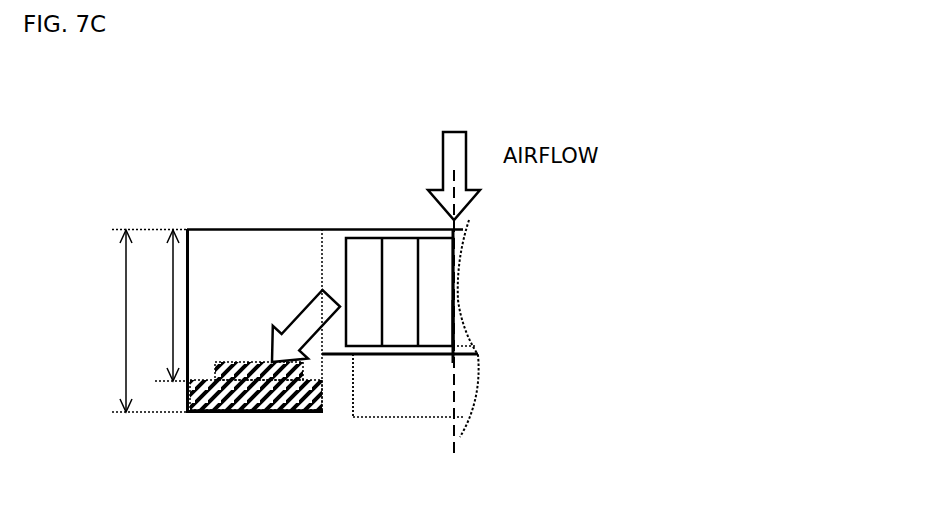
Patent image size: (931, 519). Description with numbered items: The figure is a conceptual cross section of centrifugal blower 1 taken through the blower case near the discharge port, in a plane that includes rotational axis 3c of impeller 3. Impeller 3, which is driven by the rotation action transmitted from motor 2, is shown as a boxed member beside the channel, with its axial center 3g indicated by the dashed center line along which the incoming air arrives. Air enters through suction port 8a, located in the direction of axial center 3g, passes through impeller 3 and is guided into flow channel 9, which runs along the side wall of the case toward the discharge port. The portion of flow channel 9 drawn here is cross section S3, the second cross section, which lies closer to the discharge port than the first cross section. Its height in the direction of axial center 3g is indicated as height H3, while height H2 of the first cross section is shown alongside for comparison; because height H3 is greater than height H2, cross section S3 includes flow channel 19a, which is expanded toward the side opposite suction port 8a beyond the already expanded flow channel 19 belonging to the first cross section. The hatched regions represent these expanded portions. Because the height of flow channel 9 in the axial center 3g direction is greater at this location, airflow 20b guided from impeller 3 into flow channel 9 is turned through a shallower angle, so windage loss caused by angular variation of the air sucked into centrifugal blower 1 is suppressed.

The centrifugal blower 1 is at (492, 359).
The motor 2 is at (405, 398).
The impeller 3 is at (403, 265).
The rotational axis 3c is at (548, 297).
The axial center 3g is at (453, 320).
The suction port 8a is at (452, 228).
The flow channel 9 is at (297, 242).
The flow channel 19 is at (242, 380).
The flow channel 19a is at (200, 412).
The airflow 20b is at (305, 357).
The cross section S3 is at (225, 243).
The height H2 is at (163, 305).
The height H3 is at (137, 321).